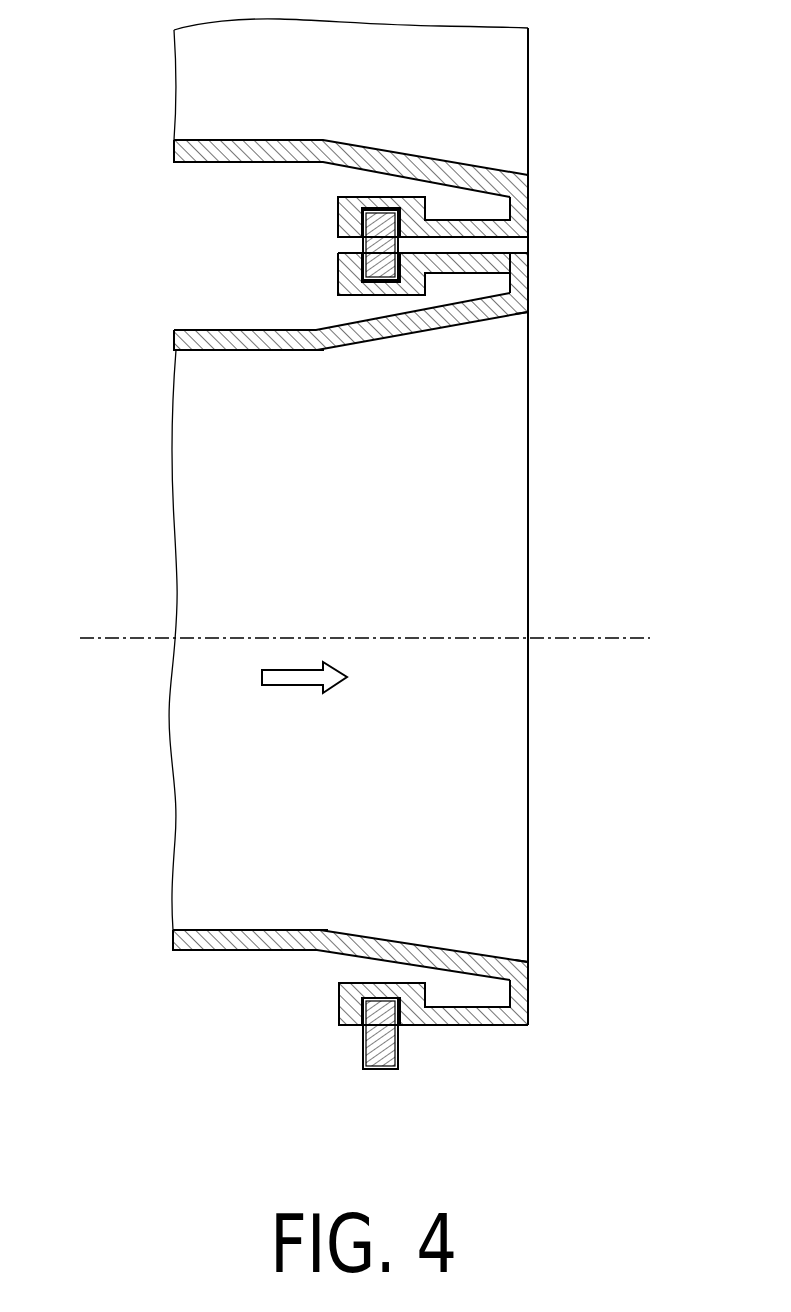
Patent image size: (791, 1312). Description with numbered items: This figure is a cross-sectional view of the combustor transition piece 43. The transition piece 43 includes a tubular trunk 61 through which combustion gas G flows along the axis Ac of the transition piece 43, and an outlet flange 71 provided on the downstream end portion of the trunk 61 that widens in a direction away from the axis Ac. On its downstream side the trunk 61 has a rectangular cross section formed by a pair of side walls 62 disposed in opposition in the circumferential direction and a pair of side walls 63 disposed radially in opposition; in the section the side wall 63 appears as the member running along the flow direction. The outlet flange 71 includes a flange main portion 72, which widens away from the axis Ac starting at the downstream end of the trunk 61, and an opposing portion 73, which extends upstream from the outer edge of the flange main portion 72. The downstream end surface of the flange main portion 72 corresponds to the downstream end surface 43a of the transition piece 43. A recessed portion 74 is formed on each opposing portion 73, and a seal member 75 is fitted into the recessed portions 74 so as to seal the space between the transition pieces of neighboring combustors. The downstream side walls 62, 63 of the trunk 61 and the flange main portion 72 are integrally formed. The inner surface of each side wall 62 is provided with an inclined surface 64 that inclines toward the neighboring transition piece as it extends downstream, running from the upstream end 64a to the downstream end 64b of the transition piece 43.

The transition piece 43 is at (151, 48).
The downstream end surface 43a is at (528, 300).
The trunk 61 is at (192, 171).
The side wall 62 is at (442, 166).
The side wall 63 is at (508, 46).
The inclined surface 64 is at (402, 152).
The upstream end 64a is at (314, 352).
The downstream end 64b is at (528, 313).
The outlet flange 71 is at (518, 204).
The flange main portion 72 is at (528, 290).
The opposing portion 73 is at (505, 247).
The recessed portion 74 is at (372, 226).
The seal member 75 is at (372, 249).
The axis Ac is at (108, 632).
The combustion gas G is at (296, 688).